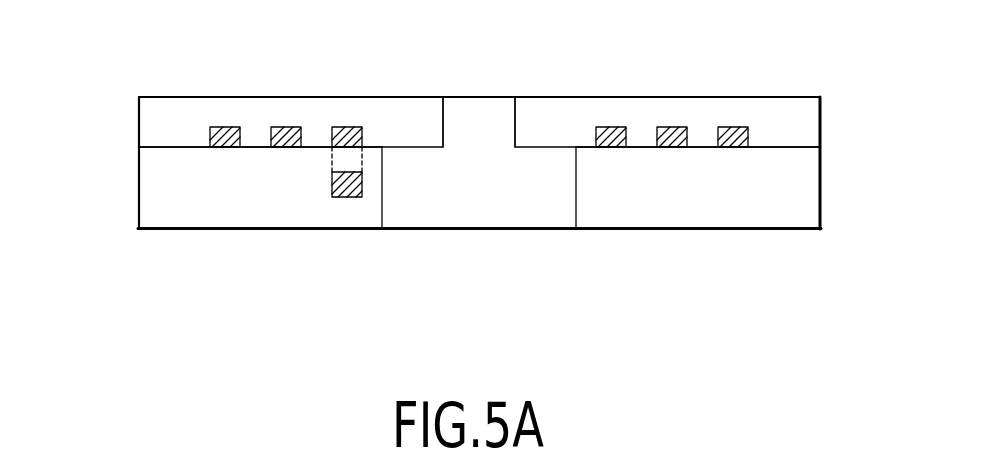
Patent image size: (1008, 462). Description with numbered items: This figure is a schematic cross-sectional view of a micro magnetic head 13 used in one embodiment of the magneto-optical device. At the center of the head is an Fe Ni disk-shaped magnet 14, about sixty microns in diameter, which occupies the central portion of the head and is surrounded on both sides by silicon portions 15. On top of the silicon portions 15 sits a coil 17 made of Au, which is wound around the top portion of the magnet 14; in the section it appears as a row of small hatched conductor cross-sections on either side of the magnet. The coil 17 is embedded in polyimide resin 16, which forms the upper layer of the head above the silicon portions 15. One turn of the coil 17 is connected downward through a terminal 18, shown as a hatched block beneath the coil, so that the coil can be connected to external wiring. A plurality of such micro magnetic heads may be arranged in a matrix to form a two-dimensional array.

The micro magnetic head 13 is at (548, 232).
The Fe Ni disk-shaped magnet 14 is at (445, 213).
The silicon portions 15 is at (230, 214).
The polyimide resin 16 is at (143, 117).
The coil 17 is at (350, 127).
The terminal 18 is at (343, 197).